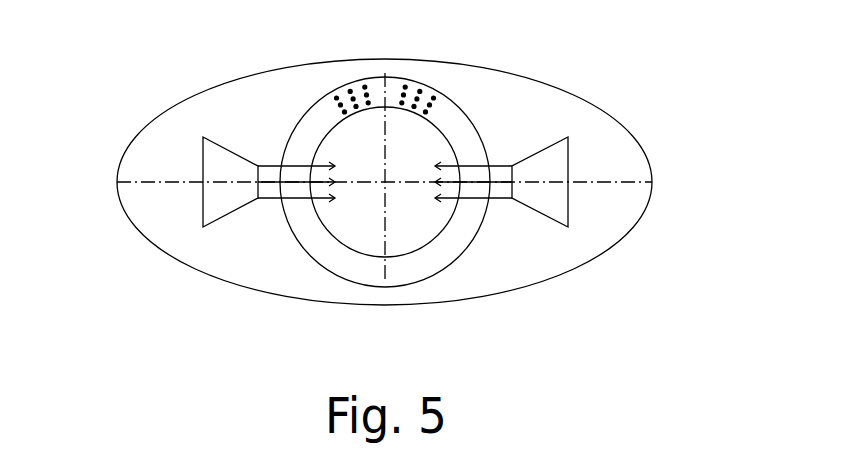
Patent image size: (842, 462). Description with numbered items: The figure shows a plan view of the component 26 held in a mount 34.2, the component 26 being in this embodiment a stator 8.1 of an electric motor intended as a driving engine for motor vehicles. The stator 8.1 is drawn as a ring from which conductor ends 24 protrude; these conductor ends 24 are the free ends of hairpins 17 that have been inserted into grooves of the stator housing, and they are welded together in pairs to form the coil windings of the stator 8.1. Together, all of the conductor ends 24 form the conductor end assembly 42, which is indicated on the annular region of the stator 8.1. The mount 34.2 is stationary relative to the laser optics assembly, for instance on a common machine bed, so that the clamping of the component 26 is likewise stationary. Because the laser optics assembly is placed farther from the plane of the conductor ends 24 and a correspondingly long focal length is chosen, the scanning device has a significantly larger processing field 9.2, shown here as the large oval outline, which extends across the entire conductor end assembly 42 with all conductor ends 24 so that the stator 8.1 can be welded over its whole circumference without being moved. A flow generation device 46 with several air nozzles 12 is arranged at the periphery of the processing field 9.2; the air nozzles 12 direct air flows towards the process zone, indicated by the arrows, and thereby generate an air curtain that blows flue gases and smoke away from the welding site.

The mount 34.2 is at (128, 96).
The conductor end assembly 42 is at (346, 82).
The hairpins 17 is at (405, 88).
The processing field 9.2 is at (494, 69).
The conductor ends 24 is at (448, 102).
The flow generation device 46 is at (211, 197).
The air nozzles 12 is at (557, 201).
The component 26 is at (331, 256).
The stator 8.1 is at (428, 266).